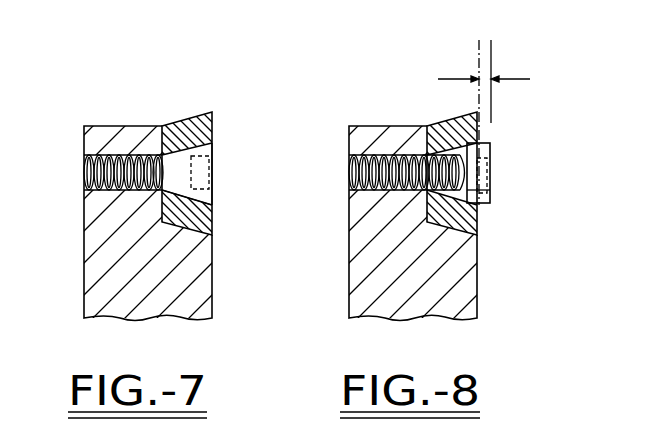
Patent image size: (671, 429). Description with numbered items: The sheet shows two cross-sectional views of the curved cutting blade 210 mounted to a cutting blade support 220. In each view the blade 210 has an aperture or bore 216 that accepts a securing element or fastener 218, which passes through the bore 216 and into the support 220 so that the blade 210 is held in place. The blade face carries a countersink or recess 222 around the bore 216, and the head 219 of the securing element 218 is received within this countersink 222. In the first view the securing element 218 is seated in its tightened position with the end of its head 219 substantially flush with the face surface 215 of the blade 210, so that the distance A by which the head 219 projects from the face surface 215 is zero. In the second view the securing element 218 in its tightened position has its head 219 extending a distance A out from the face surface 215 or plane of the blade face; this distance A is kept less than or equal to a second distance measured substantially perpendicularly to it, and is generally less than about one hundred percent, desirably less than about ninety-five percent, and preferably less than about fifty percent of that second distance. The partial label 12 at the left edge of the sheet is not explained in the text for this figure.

In FIG. 7, the prior assembly (partial label) 12 is at (17, 133).
In FIG. 7, the fastener assembly 210 is at (192, 108).
In FIG. 8, the fastener assembly 210 is at (446, 114).
In FIG. 7, the tapered wedge insert 215 is at (212, 126).
In FIG. 8, the tapered wedge insert 215 is at (477, 226).
In FIG. 7, the threaded bore 216 is at (80, 184).
In FIG. 8, the threaded bore 216 is at (345, 184).
In FIG. 7, the nut 218 is at (214, 147).
In FIG. 8, the nut 218 is at (496, 145).
In FIG. 7, the hidden thread portion 219 is at (210, 165).
In FIG. 8, the hidden thread portion 219 is at (490, 172).
In FIG. 7, the body block 220 is at (84, 274).
In FIG. 8, the body block 220 is at (349, 275).
In FIG. 7, the bolt end 222 is at (183, 197).
In FIG. 8, the bolt end 222 is at (464, 193).
In FIG. 8, the offset dimension A is at (491, 72).